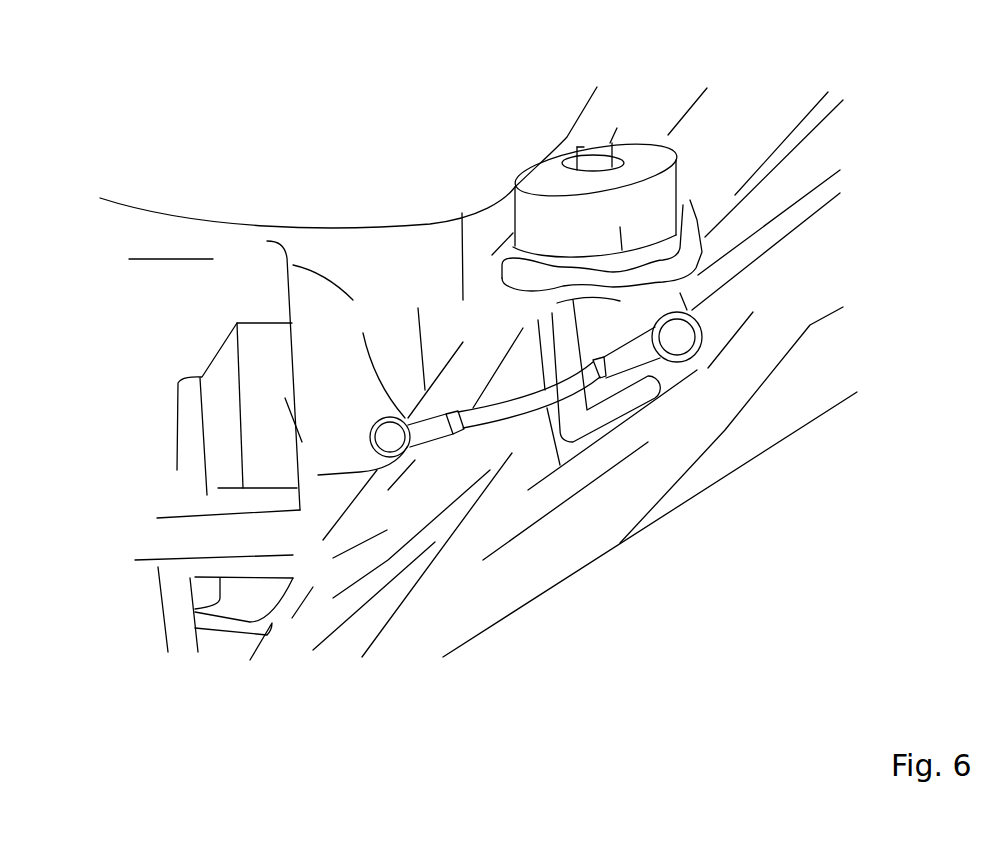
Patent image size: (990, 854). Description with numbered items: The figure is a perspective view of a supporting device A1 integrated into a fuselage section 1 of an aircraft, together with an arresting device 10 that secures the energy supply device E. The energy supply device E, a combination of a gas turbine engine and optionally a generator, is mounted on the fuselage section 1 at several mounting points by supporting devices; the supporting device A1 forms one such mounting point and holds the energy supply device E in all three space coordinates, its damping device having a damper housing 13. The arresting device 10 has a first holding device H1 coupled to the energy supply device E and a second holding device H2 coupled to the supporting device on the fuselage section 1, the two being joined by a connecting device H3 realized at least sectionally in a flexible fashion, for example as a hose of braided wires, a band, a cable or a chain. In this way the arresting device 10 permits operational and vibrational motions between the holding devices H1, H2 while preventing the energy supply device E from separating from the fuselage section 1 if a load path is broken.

The fuselage section 1 is at (685, 442).
The arresting device 10 is at (532, 447).
The damper housing 13 is at (684, 202).
The supporting device A1 is at (668, 206).
The energy supply device E is at (201, 151).
The first holding device H1 is at (412, 493).
The second holding device H2 is at (692, 378).
The connecting device H3 is at (540, 436).